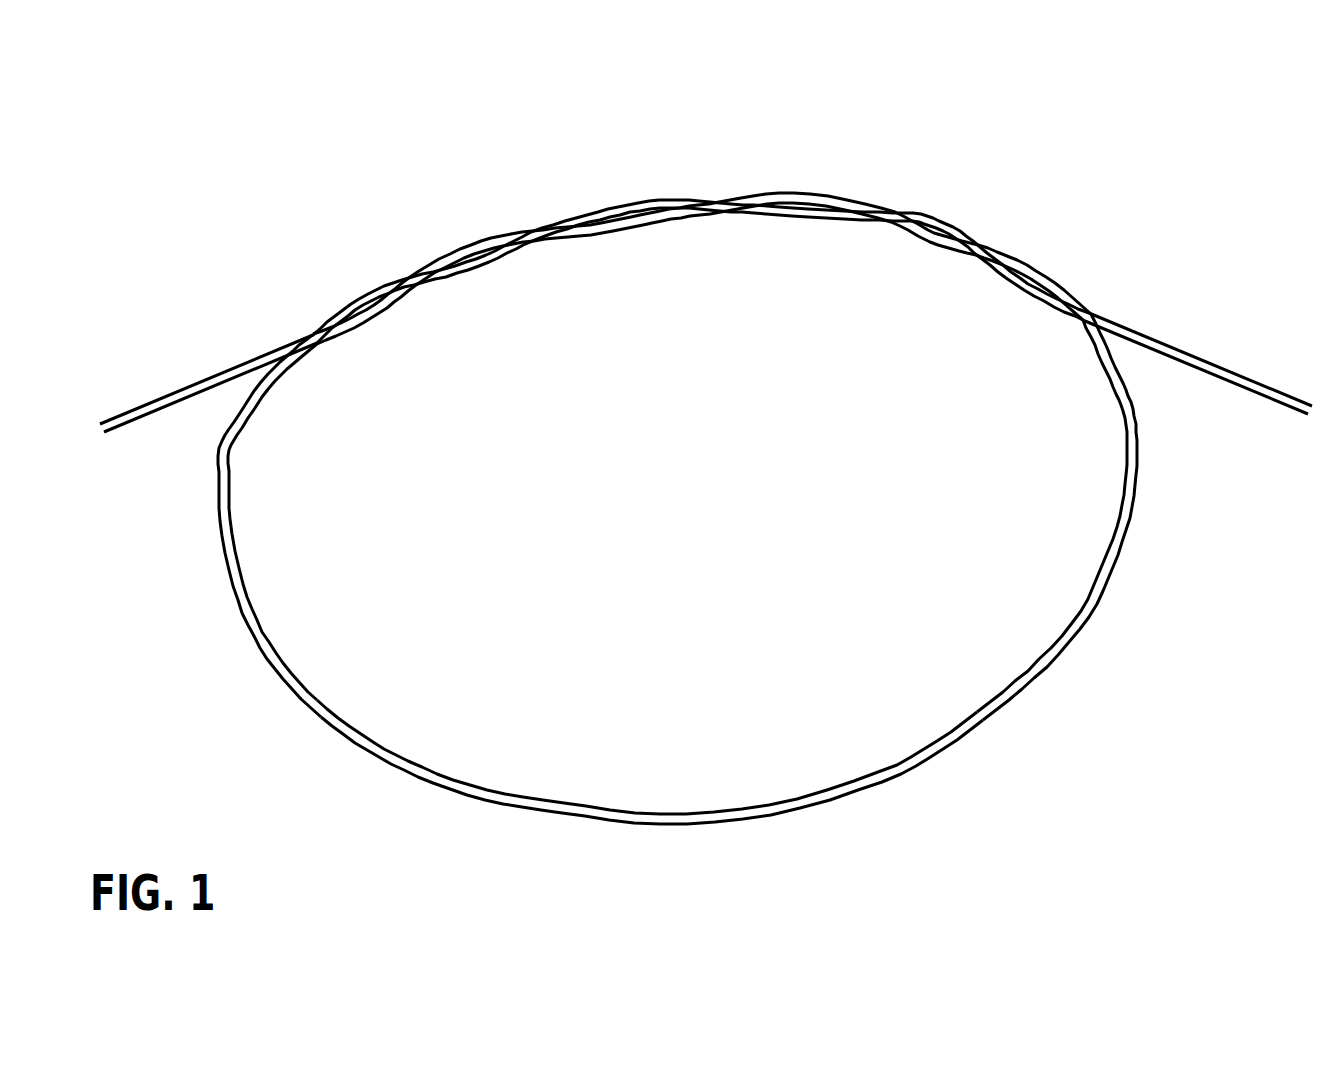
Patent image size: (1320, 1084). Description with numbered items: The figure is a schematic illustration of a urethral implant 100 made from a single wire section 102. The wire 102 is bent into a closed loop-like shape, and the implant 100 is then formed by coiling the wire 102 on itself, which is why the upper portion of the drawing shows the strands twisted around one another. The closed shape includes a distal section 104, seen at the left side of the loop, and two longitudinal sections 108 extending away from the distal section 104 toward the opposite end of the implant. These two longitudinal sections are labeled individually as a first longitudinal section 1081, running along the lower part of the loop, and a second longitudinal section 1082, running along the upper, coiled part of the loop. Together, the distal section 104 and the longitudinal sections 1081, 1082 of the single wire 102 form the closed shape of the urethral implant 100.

The urethral implant 100 is at (382, 141).
The wire section 102 is at (161, 401).
The distal section 104 is at (222, 554).
The longitudinal sections 108 is at (1138, 526).
The first longitudinal section 1081 is at (705, 831).
The second longitudinal section 1082 is at (656, 198).